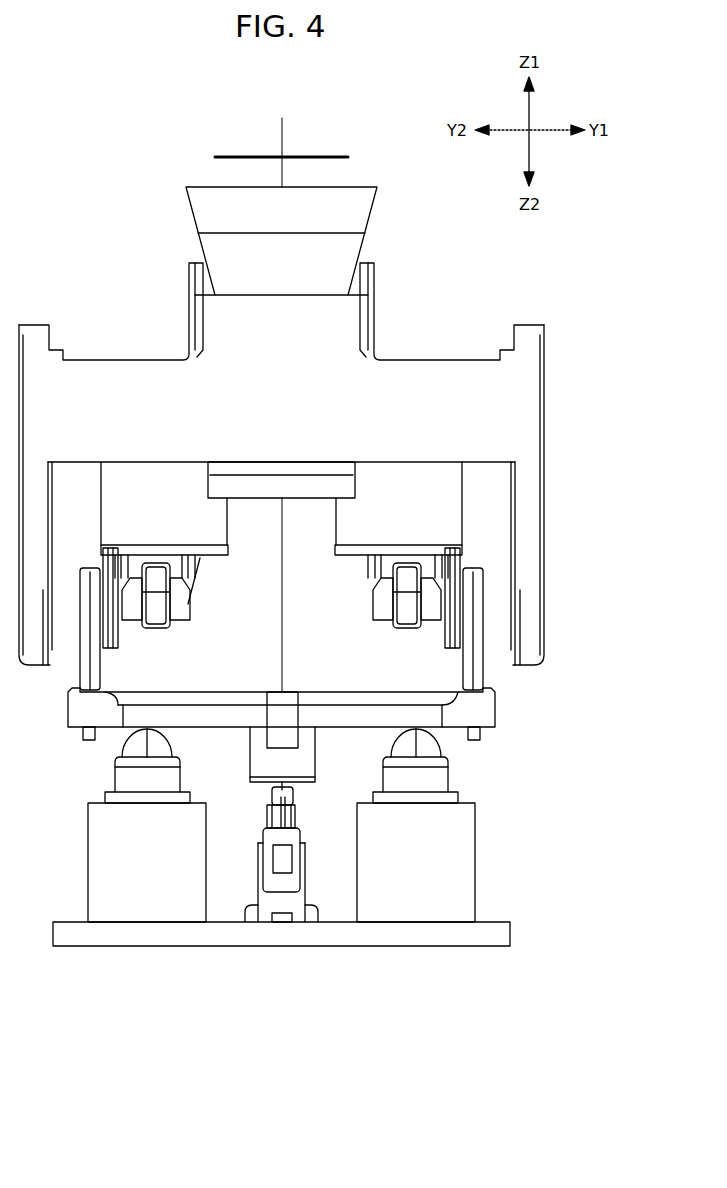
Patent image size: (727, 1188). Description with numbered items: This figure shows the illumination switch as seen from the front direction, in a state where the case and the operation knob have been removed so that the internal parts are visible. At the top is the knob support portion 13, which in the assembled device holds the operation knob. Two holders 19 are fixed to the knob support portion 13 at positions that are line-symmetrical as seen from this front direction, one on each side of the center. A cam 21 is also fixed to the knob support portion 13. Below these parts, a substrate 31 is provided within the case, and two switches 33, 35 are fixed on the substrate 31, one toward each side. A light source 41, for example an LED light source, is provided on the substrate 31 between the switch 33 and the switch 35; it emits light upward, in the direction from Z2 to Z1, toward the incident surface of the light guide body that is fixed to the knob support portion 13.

The knob support portion 13 is at (522, 407).
The holder 19 is at (200, 565).
The cam 21 is at (488, 668).
The substrate 31 is at (415, 933).
The switch 33 is at (428, 743).
The switch 35 is at (133, 745).
The light source 41 is at (281, 868).